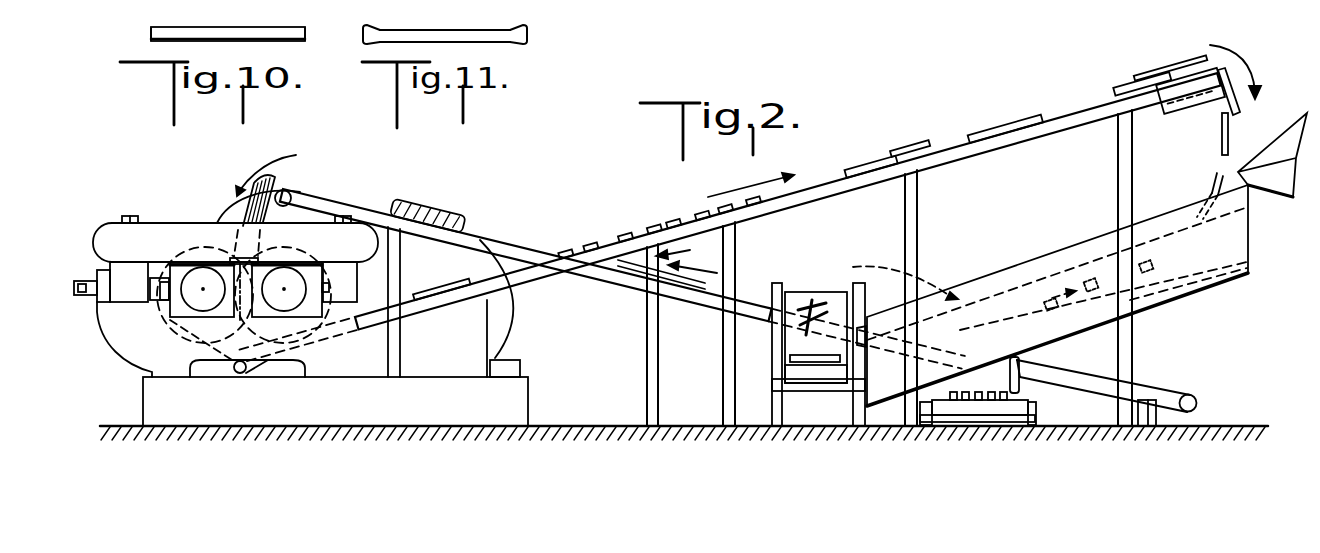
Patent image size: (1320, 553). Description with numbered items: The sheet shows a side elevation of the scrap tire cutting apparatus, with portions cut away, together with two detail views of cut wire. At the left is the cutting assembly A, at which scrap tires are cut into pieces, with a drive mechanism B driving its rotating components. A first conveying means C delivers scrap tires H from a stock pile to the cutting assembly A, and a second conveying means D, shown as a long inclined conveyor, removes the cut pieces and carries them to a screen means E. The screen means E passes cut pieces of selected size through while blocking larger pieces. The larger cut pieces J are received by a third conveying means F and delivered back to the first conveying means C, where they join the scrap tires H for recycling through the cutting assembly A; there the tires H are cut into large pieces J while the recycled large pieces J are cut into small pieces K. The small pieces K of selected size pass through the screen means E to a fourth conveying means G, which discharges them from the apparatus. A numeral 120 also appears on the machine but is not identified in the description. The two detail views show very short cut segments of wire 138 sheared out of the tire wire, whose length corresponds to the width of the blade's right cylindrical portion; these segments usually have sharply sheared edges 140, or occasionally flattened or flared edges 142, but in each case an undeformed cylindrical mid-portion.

In FIG. 10, the cut segment of wire 138 is at (243, 32).
In FIG. 11, the cut segment of wire 138 is at (462, 33).
In FIG. 10, the sharply sheared edges 140 is at (150, 33).
In FIG. 11, the flattened or flared edges 142 is at (527, 34).
In FIG. 2, the feed path 120 is at (249, 334).
In FIG. 2, the cutting assembly A is at (188, 208).
In FIG. 2, the drive mechanism B is at (522, 237).
In FIG. 2, the first conveying means C is at (625, 294).
In FIG. 2, the second conveying means D is at (794, 222).
In FIG. 2, the screen means E is at (1070, 232).
In FIG. 2, the third conveying means F is at (762, 349).
In FIG. 2, the fourth conveying means G is at (1036, 388).
In FIG. 2, the scrap tires H is at (424, 192).
In FIG. 2, the large pieces of scrap tire J is at (838, 274).
In FIG. 2, the small pieces of scrap tire K is at (986, 386).